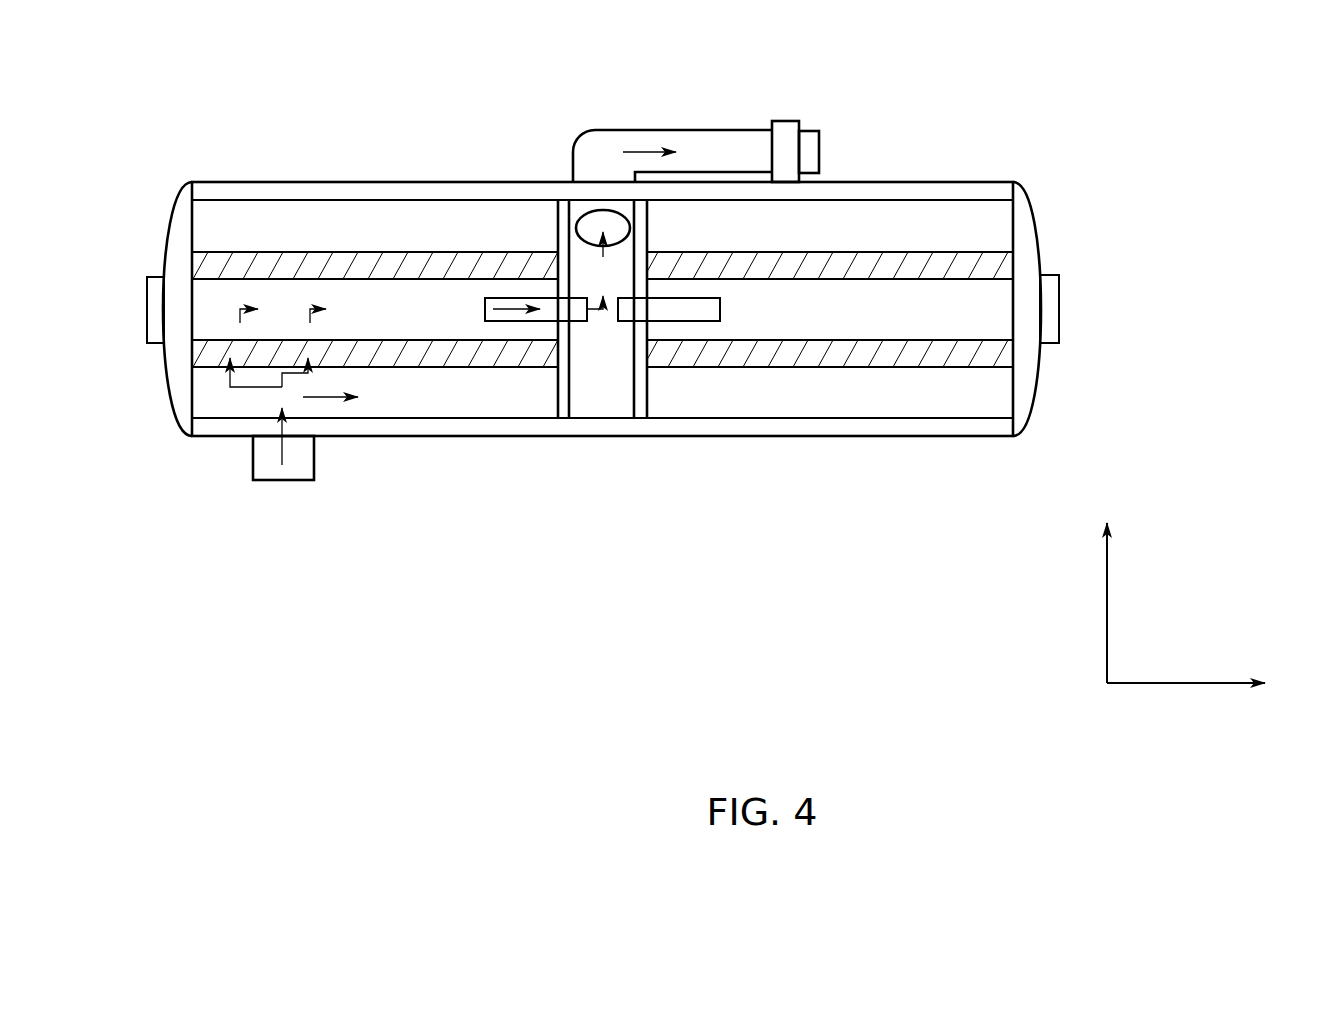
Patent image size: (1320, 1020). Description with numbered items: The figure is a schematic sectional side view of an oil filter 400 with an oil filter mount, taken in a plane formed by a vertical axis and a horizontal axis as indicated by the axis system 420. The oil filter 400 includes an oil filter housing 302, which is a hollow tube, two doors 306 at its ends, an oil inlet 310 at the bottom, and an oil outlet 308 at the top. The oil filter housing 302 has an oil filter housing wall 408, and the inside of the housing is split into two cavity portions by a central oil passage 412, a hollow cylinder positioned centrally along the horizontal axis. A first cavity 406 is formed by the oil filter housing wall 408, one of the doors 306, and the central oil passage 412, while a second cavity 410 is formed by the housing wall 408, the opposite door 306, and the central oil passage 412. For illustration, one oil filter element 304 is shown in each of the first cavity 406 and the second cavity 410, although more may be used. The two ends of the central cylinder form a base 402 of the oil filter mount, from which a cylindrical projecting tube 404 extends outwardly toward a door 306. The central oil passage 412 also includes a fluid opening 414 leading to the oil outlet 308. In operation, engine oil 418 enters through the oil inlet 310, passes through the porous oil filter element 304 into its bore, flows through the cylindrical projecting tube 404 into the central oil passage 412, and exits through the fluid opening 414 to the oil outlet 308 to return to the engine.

The oil filter 400 is at (256, 86).
The oil filter housing 302 is at (477, 438).
The oil filter element 304 is at (207, 357).
The door 306 is at (177, 240).
The oil outlet 308 is at (810, 137).
The oil inlet 310 is at (317, 458).
The base 402 is at (635, 405).
The cylindrical projecting tube 404 is at (693, 313).
The first cavity 406 is at (240, 218).
The oil filter housing wall 408 is at (352, 192).
The second cavity 410 is at (963, 215).
The central oil passage 412 is at (588, 403).
The fluid opening 414 is at (590, 228).
The engine oil 418 is at (340, 397).
The axis system 420 is at (1166, 500).